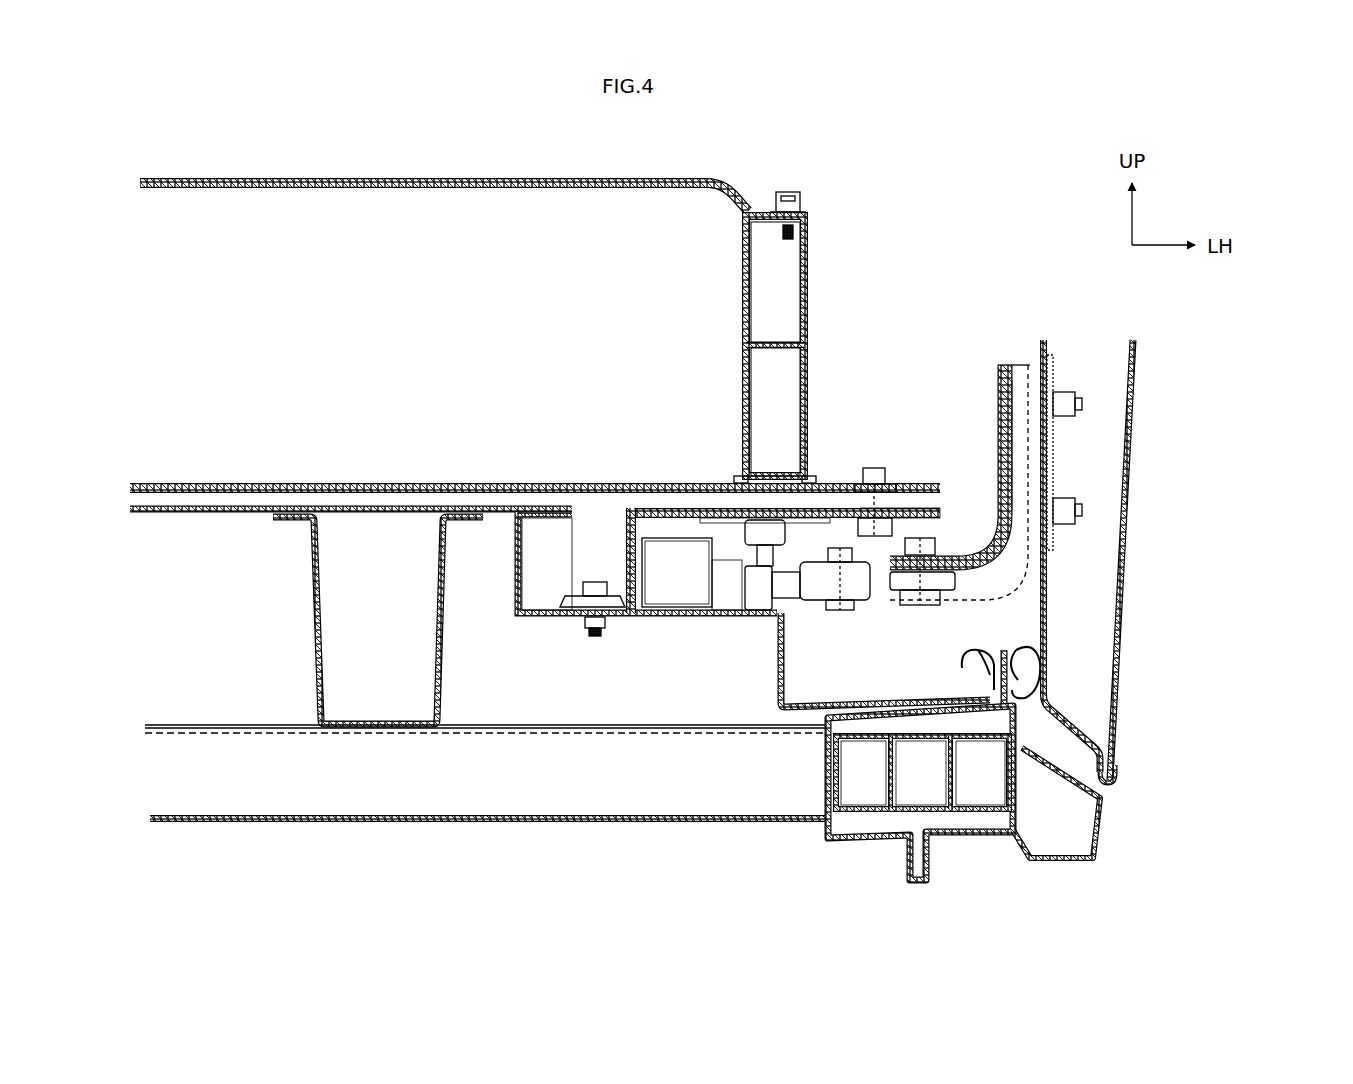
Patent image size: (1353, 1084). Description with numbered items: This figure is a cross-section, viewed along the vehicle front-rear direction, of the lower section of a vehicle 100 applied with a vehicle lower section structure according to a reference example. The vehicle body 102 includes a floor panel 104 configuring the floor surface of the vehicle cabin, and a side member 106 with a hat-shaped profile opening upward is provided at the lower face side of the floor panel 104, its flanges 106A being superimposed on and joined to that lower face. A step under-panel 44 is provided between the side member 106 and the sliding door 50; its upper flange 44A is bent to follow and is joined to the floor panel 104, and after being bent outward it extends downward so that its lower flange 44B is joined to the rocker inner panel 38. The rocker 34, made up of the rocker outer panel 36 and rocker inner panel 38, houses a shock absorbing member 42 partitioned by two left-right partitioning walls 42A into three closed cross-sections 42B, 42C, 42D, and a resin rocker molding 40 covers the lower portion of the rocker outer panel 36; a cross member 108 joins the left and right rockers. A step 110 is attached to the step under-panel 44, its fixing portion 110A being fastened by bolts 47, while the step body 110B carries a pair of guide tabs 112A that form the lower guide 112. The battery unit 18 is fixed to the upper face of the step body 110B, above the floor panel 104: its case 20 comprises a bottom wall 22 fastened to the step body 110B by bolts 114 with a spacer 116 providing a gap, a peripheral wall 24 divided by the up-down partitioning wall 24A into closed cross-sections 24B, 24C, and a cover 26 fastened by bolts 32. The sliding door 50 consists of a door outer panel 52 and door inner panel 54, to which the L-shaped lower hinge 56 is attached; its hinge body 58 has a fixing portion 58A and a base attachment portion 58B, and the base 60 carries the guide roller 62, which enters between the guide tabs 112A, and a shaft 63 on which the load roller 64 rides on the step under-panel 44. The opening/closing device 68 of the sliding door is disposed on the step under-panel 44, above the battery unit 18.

The battery unit 18 is at (444, 189).
The case 20 is at (444, 198).
The bottom wall 22 is at (300, 483).
The peripheral wall 24 is at (726, 349).
The up-down partitioning wall 24A is at (768, 342).
The closed cross-section 24B is at (752, 279).
The closed cross-section 24C is at (752, 411).
The cover 26 is at (360, 190).
The bolts 32 is at (796, 190).
The rocker 34 is at (897, 777).
The rocker outer panel 36 is at (1024, 808).
The rocker inner panel 38 is at (920, 773).
The rocker molding 40 is at (1101, 826).
The shock absorbing member 42 is at (924, 773).
The left-right partitioning walls 42A is at (946, 748).
The closed cross-section 42B is at (884, 783).
The closed cross-section 42C is at (943, 783).
The closed cross-section 42D is at (1002, 783).
The step under-panel 44 is at (754, 609).
The upper flange 44A is at (536, 520).
The lower flange 44B is at (845, 704).
The bolts 47 is at (598, 582).
The sliding door 50 is at (1174, 561).
The door outer panel 52 is at (1122, 632).
The door inner panel 54 is at (1042, 660).
The lower hinge 56 is at (998, 350).
The hinge body 58 is at (974, 496).
The fixing portion 58A is at (997, 405).
The base attachment portion 58B is at (922, 612).
The base 60 is at (828, 612).
The guide roller 62 is at (785, 553).
The shaft 63 is at (850, 660).
The load roller 64 is at (740, 603).
The opening/closing device 68 is at (660, 586).
The vehicle 100 is at (1187, 561).
The vehicle body 102 is at (480, 721).
The floor panel 104 is at (166, 514).
The side member 106 is at (360, 620).
The flanges 106A is at (288, 522).
The cross member 108 is at (318, 823).
The step 110 is at (767, 488).
The fixing portion 110A is at (578, 520).
The step body 110B is at (935, 510).
The lower guide 112 is at (754, 445).
The guide tabs 112A is at (840, 414).
The bolts 114 is at (875, 468).
The spacer 116 is at (915, 525).